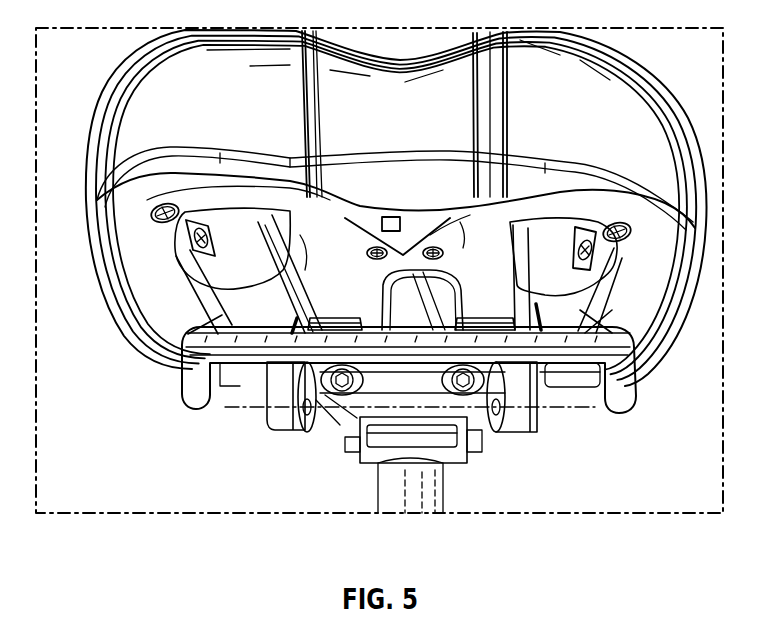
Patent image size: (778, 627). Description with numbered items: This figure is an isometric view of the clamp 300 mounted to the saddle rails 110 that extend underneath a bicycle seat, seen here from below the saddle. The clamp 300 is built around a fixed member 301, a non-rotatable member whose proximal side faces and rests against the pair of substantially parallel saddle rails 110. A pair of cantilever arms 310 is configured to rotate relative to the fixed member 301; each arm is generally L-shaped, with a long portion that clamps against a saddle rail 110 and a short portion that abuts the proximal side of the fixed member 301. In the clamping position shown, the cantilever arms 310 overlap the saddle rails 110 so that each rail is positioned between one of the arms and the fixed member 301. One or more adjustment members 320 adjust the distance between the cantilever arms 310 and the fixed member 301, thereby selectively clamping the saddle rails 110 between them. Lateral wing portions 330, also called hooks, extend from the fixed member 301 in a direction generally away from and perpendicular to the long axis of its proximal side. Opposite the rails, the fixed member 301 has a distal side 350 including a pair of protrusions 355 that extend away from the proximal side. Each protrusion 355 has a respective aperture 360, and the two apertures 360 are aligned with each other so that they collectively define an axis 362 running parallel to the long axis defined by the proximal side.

The saddle rail 110 is at (290, 297).
The clamp 300 is at (414, 240).
The fixed member 301 is at (380, 337).
The cantilever arm 310 is at (313, 320).
The adjustment member 320 is at (470, 420).
The lateral wing portion 330 is at (197, 404).
The distal side 350 is at (250, 362).
The protrusion 355 is at (290, 430).
The aperture 360 is at (316, 402).
The axis 362 is at (590, 408).